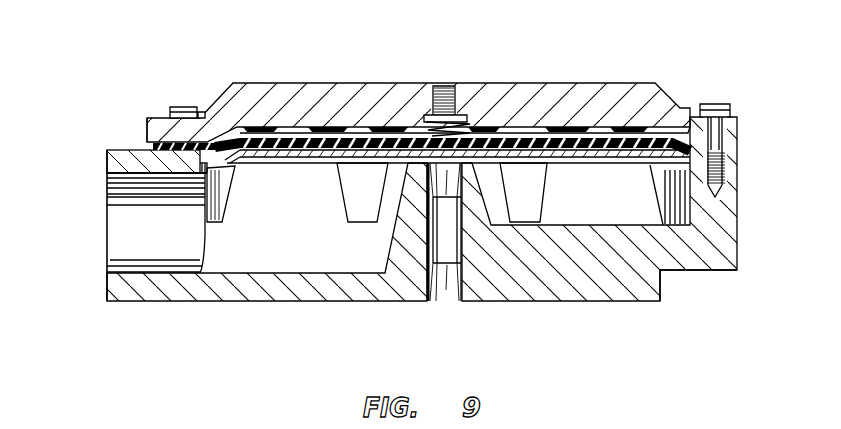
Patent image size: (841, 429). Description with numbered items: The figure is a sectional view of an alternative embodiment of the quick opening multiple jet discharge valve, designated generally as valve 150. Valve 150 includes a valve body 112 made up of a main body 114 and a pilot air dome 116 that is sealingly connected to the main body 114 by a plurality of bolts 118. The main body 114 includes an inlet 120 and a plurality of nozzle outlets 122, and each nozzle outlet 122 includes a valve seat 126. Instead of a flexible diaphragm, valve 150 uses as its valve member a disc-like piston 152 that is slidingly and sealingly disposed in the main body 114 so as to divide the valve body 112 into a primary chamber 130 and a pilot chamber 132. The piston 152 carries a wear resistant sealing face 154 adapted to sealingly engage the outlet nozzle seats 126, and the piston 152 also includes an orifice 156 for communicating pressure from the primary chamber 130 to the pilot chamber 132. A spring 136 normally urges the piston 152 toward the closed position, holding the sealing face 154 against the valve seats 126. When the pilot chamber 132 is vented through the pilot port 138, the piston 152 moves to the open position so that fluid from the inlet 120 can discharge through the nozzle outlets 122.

The valve body 112 is at (521, 303).
The main body 114 is at (680, 273).
The pilot air dome 116 is at (259, 83).
The bolts 118 is at (191, 107).
The inlet 120 is at (118, 238).
The nozzle outlets 122 is at (455, 303).
The valve seat 126 is at (512, 128).
The primary chamber 130 is at (223, 187).
The pilot chamber 132 is at (677, 107).
The spring 136 is at (463, 117).
The pilot port 138 is at (448, 86).
The valve 150 is at (580, 68).
The disc-like piston 152 is at (337, 131).
The wear resistant sealing face 154 is at (303, 163).
The orifice 156 is at (358, 142).